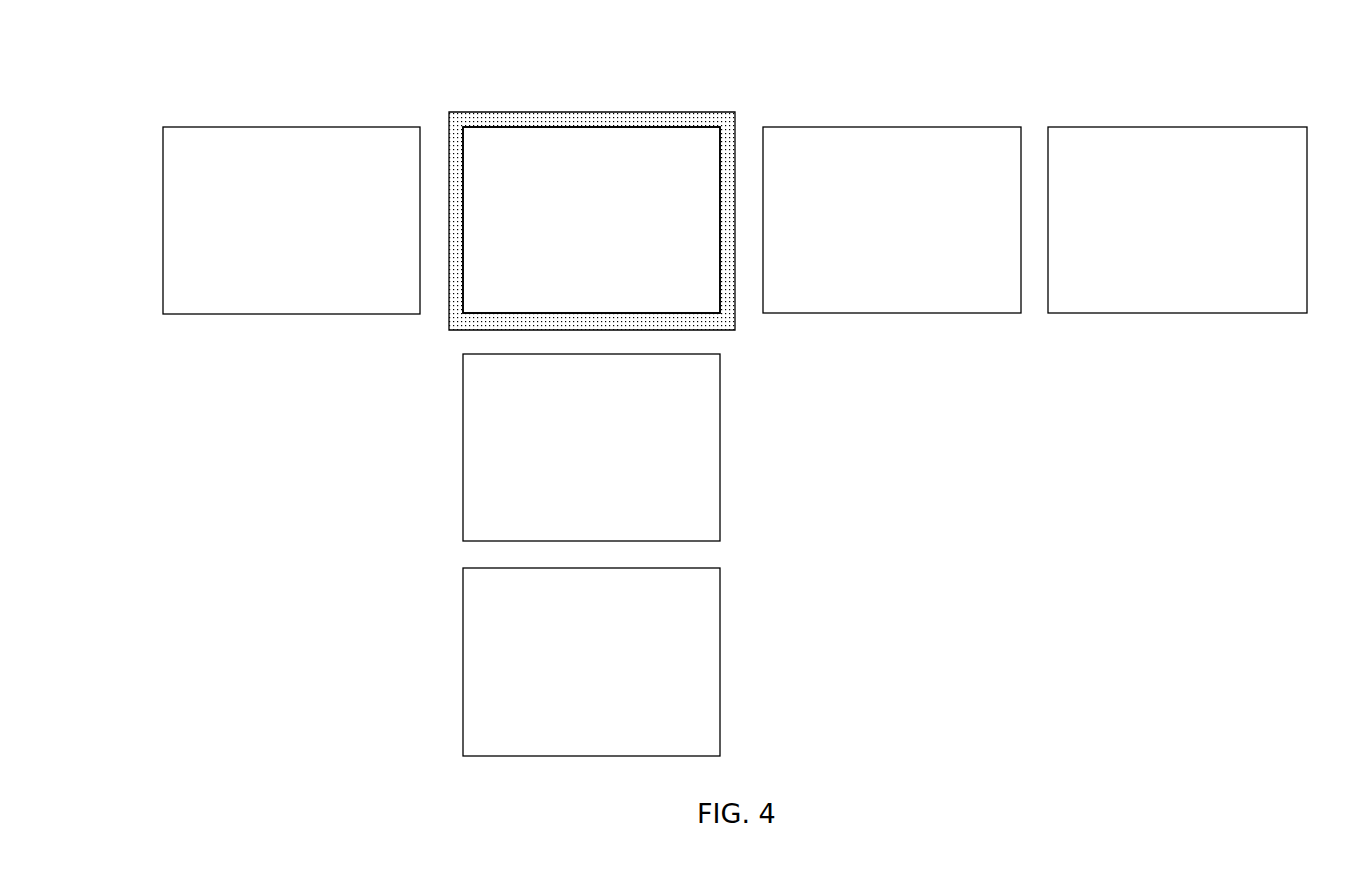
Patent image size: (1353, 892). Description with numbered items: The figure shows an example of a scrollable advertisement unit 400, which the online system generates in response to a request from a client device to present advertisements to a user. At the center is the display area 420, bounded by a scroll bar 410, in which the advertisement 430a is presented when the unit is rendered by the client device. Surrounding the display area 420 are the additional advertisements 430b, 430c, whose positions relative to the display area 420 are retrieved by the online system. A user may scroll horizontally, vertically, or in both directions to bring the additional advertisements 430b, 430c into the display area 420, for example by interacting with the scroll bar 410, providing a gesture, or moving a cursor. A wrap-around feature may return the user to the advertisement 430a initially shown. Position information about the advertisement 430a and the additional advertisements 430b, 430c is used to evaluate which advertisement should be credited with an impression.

The scrollable advertisement unit 400 is at (205, 35).
The scroll bar 410 is at (463, 110).
The display area 420 is at (553, 127).
The advertisement 430a is at (570, 230).
The additional advertisement 430b is at (268, 228).
The additional advertisement 430c is at (1154, 228).